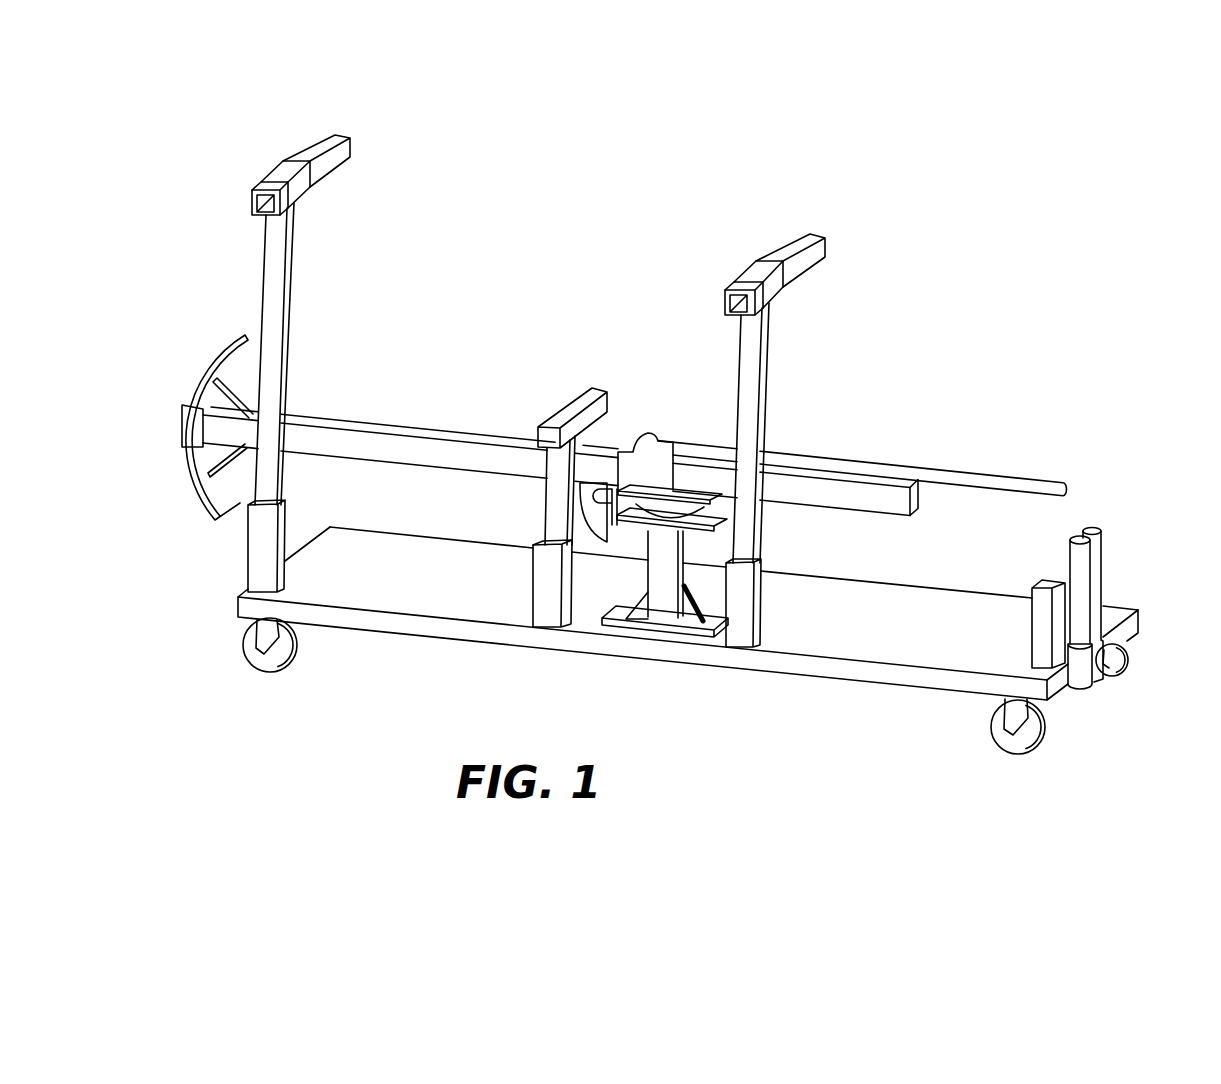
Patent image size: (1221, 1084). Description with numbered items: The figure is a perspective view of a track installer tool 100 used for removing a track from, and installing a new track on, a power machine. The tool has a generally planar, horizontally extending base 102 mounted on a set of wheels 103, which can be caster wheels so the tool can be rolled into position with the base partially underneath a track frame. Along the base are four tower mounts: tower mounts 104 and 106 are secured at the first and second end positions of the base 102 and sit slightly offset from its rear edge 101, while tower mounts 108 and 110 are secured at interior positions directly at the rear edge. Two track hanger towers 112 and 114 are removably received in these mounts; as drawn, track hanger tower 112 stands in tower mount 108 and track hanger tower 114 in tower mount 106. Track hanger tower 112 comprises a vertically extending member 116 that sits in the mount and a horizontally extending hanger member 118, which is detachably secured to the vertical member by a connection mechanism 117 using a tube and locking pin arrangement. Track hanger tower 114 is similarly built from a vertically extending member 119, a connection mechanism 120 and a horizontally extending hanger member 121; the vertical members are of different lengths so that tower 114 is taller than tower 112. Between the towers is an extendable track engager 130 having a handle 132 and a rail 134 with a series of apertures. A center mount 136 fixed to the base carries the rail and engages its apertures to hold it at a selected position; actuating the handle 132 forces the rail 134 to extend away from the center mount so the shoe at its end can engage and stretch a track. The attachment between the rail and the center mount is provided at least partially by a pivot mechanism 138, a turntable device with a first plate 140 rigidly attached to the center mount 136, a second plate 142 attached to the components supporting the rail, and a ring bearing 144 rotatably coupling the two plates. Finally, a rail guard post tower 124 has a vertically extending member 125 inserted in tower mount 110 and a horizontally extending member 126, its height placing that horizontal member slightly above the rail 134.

The track installer tool 100 is at (975, 220).
The rear edge 101 is at (876, 674).
The base 102 is at (948, 608).
The wheels 103 is at (279, 659).
The tower mount 104 is at (1052, 638).
The tower mount 106 is at (257, 555).
The tower mount 108 is at (742, 632).
The tower mount 110 is at (552, 604).
The track hanger tower 112 is at (735, 257).
The track hanger tower 114 is at (258, 155).
The vertically extending member 116 is at (765, 360).
The connection mechanism 117 is at (757, 275).
The horizontally extending hanger member 118 is at (808, 240).
The vertically extending member 119 is at (288, 270).
The connection mechanism 120 is at (282, 160).
The horizontally extending hanger member 121 is at (337, 140).
The rail guard post tower 124 is at (578, 362).
The vertically extending member 125 is at (530, 572).
The horizontally extending member 126 is at (569, 413).
The extendable track engager 130 is at (661, 405).
The handle 132 is at (990, 480).
The rail 134 is at (298, 417).
The center mount 136 is at (650, 620).
The pivot mechanism 138 is at (706, 560).
The first plate 140 is at (660, 532).
The second plate 142 is at (693, 498).
The ring bearing 144 is at (636, 508).